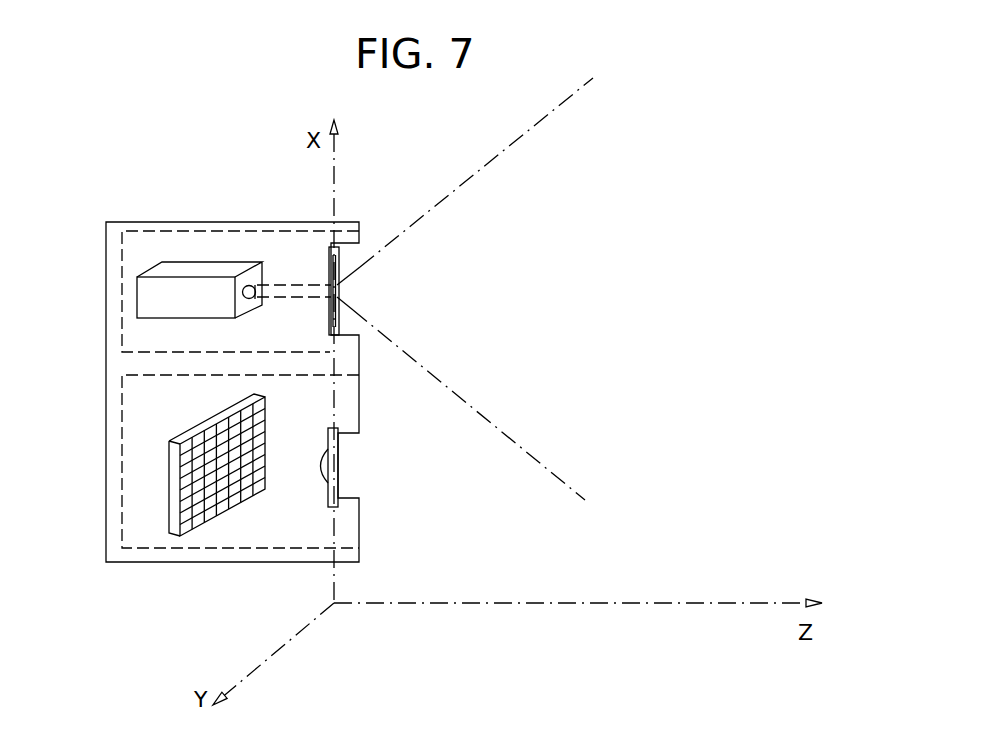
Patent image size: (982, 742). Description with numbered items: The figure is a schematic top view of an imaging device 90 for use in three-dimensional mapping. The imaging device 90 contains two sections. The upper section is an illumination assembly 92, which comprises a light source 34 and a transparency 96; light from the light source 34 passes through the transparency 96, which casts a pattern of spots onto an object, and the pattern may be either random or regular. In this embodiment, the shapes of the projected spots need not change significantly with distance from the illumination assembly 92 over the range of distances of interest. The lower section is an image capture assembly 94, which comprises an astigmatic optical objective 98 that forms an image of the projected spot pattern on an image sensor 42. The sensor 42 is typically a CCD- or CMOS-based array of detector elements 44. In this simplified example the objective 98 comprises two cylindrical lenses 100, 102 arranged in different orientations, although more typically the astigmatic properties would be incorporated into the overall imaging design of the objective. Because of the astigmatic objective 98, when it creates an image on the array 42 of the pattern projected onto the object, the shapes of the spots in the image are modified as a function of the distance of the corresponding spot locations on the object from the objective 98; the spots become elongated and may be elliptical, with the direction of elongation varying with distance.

The light source 34 is at (137, 290).
The image sensor 42 is at (202, 430).
The detector elements 44 is at (184, 486).
The imaging device 90 is at (183, 222).
The illumination assembly 92 is at (240, 229).
The image capture assembly 94 is at (178, 549).
The transparency 96 is at (329, 260).
The astigmatic optical objective 98 is at (368, 455).
The cylindrical lens 100 is at (323, 453).
The cylindrical lens 102 is at (339, 451).